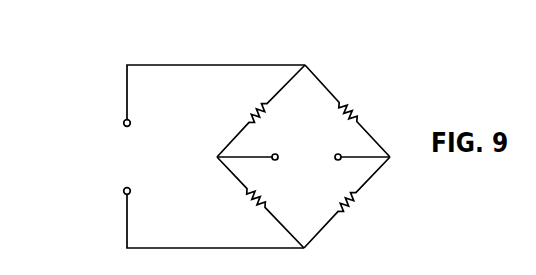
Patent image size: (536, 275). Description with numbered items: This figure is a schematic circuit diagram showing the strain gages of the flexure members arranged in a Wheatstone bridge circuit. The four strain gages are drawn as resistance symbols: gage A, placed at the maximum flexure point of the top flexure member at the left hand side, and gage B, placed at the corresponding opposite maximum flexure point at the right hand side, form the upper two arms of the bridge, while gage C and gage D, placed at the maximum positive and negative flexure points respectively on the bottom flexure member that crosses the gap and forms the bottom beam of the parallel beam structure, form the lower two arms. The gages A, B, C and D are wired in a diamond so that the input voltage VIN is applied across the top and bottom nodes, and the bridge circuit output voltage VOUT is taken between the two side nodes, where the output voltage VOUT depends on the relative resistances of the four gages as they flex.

The strain gage A is at (261, 111).
The strain gage B is at (347, 111).
The strain gage C is at (260, 202).
The strain gage D is at (347, 202).
The input voltage VIN is at (124, 160).
The bridge circuit output voltage VOUT is at (303, 161).